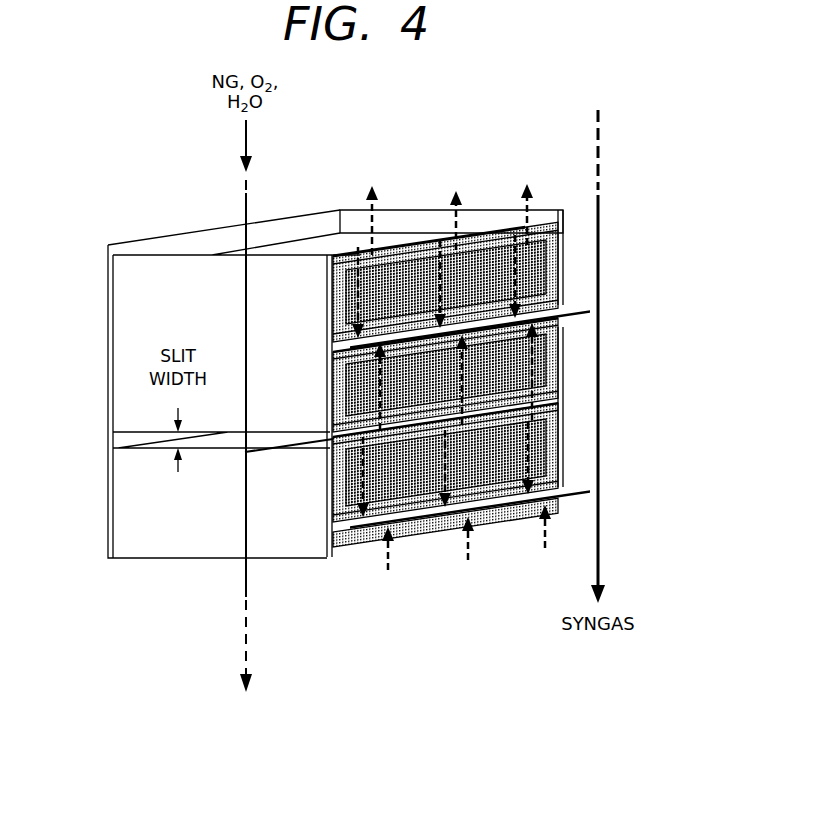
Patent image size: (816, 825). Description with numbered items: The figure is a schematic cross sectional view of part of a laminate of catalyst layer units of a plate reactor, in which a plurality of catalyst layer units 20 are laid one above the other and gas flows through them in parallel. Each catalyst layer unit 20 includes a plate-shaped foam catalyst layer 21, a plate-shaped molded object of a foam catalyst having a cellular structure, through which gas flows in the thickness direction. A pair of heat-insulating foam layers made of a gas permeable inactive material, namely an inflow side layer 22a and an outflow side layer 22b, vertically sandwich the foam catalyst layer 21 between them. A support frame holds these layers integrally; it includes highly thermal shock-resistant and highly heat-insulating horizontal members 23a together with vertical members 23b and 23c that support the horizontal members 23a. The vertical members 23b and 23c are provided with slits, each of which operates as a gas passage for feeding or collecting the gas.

The catalyst layer unit 20 is at (610, 226).
The plate-shaped foam catalyst layer 21 is at (558, 450).
The inflow side layer 22a is at (553, 410).
The outflow side layer 22b is at (552, 503).
The horizontal members 23a is at (546, 225).
The vertical member 23b is at (166, 272).
The vertical member 23c is at (414, 212).